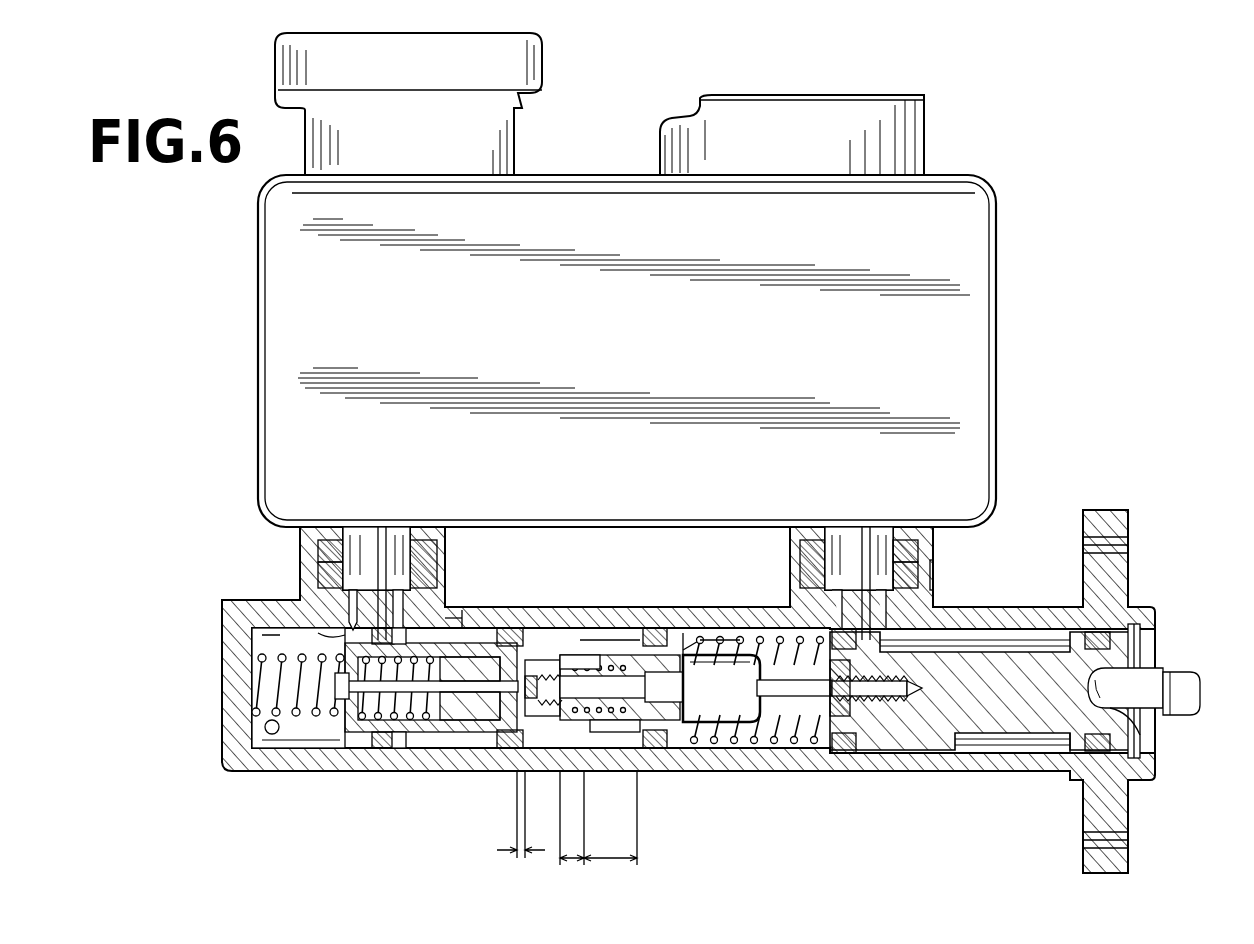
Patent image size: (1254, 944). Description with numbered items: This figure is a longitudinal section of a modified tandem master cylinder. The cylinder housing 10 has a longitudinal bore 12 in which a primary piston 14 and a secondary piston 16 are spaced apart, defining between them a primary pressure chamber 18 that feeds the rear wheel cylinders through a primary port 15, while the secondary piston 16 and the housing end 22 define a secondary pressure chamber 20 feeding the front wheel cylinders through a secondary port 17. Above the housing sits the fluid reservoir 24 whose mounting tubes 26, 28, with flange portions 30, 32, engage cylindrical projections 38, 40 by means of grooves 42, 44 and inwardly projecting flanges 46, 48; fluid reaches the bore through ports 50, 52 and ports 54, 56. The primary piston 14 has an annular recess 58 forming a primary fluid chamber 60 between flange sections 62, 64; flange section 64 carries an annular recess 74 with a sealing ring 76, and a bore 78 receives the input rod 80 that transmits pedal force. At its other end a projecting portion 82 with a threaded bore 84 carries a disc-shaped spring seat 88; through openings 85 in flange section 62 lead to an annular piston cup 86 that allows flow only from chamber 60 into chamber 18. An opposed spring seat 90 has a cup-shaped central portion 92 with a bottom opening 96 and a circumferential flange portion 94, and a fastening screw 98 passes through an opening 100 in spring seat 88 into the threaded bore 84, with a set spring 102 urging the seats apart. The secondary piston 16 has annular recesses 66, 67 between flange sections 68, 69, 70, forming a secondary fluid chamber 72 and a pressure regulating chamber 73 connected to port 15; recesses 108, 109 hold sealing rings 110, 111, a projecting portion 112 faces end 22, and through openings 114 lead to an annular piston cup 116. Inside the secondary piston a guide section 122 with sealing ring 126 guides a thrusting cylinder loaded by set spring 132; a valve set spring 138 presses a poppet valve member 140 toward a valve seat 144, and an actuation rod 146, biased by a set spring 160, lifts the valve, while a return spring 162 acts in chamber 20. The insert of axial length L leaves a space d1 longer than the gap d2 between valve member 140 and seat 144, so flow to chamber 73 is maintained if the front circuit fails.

The cylinder housing 10 is at (727, 622).
The longitudinal bore 12 is at (740, 750).
The primary piston 14 is at (1010, 655).
The primary port 15 is at (556, 740).
The secondary piston 16 is at (505, 640).
The secondary port 17 is at (272, 736).
The primary pressure chamber 18 is at (700, 640).
The secondary pressure chamber 20 is at (262, 642).
The end of the housing 22 is at (236, 690).
The fluid reservoir 24 is at (588, 337).
The mounting tube 26 is at (900, 545).
The mounting tube 28 is at (413, 560).
The flange portion 30 is at (776, 607).
The flange portion 32 is at (318, 555).
The cylindrical projection 38 is at (930, 580).
The cylindrical projection 40 is at (432, 590).
The groove 42 is at (918, 560).
The groove 44 is at (318, 578).
The inwardly projecting flange 46 is at (920, 545).
The inwardly projecting flange 48 is at (440, 545).
The port 50 is at (868, 600).
The port 52 is at (383, 600).
The port 54 is at (812, 560).
The port 56 is at (352, 612).
The annular recess 58 is at (1092, 636).
The primary fluid chamber 60 is at (1000, 752).
The flange section 62 is at (892, 702).
The flange section 64 is at (1074, 752).
The annular recess 66 is at (455, 635).
The annular recess 67 is at (612, 640).
The flange section 68 is at (394, 742).
The flange section 69 is at (530, 740).
The flange section 70 is at (652, 758).
The secondary fluid chamber 72 is at (446, 740).
The pressure regulating chamber 73 is at (604, 742).
The annular recess 74 is at (1142, 660).
The sealing ring 76 is at (1142, 632).
The longitudinally extending bore 78 is at (1145, 735).
The input rod 80 is at (1190, 706).
The projecting portion 82 is at (862, 700).
The threaded bore 84 is at (880, 700).
The through openings 85 is at (950, 645).
The annular piston cup 86 is at (859, 558).
The spring seat 88 is at (721, 688).
The spring seat 90 is at (772, 750).
The cup-shaped central portion 92 is at (794, 693).
The circumferential flange portion 94 is at (686, 748).
The opening 96 is at (736, 640).
The fastening screw 98 is at (885, 640).
The opening 100 is at (840, 735).
The set spring 102 is at (688, 652).
The annular recess 108 is at (513, 628).
The annular recess 109 is at (600, 630).
The sealing ring 110 is at (470, 640).
The sealing ring 111 is at (658, 628).
The projecting portion 112 is at (303, 635).
The through openings 114 is at (376, 558).
The annular piston cup 116 is at (374, 748).
The guide section 122 is at (716, 688).
The sealing ring / annular protrusion 126 is at (562, 630).
The set spring 132 is at (592, 740).
The valve set spring 138 is at (578, 655).
The poppet valve member 140 is at (545, 745).
The valve seat 144 is at (506, 745).
The actuation rod 146 is at (470, 702).
The set spring 160 is at (410, 722).
The return spring 162 is at (258, 697).
The longitudinal space d1 is at (572, 862).
The dimension between poppet valve and valve seat d2 is at (512, 856).
The axial length of the insert L is at (612, 860).